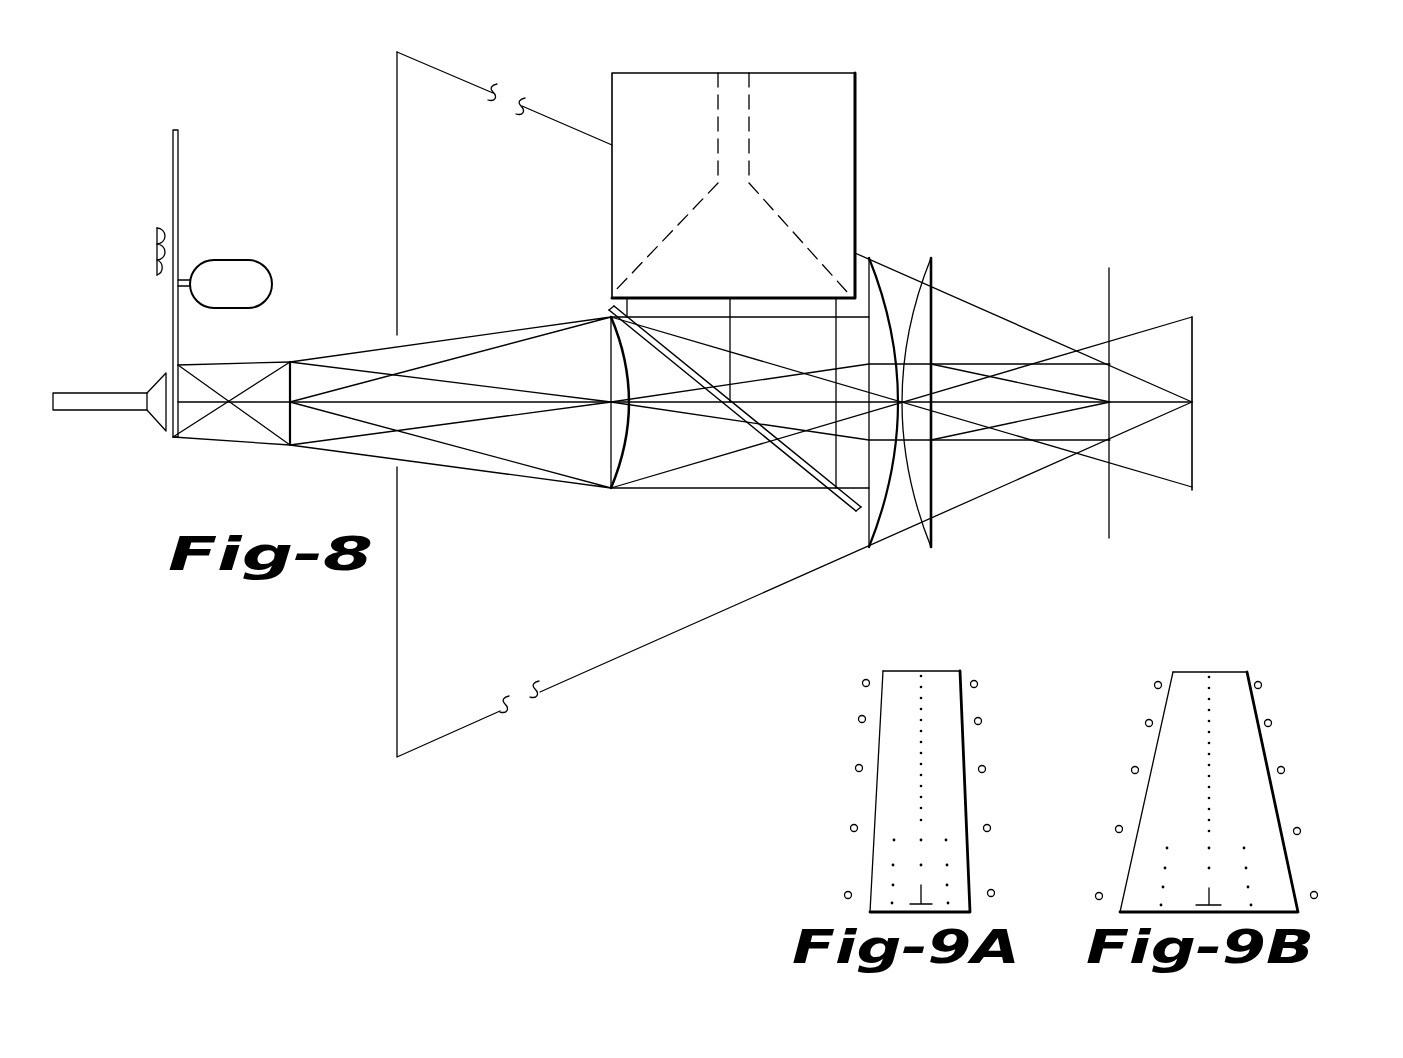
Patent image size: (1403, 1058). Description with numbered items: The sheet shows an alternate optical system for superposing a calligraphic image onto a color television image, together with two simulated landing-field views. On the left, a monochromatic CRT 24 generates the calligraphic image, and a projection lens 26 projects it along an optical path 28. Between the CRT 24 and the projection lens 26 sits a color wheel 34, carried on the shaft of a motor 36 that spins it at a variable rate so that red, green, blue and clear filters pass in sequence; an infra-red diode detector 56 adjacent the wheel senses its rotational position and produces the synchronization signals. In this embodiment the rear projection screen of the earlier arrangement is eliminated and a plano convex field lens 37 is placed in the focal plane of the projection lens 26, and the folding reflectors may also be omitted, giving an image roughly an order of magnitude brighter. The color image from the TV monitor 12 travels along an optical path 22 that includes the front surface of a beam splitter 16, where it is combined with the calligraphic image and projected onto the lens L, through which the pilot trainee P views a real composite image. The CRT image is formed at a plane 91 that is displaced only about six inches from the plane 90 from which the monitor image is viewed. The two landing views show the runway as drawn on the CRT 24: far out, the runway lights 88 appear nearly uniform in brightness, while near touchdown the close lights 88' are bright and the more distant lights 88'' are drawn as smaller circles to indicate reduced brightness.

In FIG. 8, the TV monitor 12 is at (857, 112).
In FIG. 8, the beam splitter 16 is at (796, 458).
In FIG. 8, the optical path 22 is at (836, 333).
In FIG. 8, the CRT 24 is at (152, 383).
In FIG. 8, the projection lens 26 is at (240, 365).
In FIG. 8, the optical path 28 is at (557, 324).
In FIG. 8, the color wheel 34 is at (178, 178).
In FIG. 8, the motor 36 is at (250, 298).
In FIG. 8, the plano convex field lens 37 is at (609, 441).
In FIG. 8, the infra-red diode detector 56 is at (158, 225).
In FIG. 8, the plane 90 is at (1194, 353).
In FIG. 8, the plane 91 is at (1110, 512).
In FIG. 8, the lens L is at (932, 328).
In FIG. 8, the pilot trainee P is at (1108, 400).
In FIG. 9A, the runway lights 88 is at (934, 789).
In FIG. 9B, the lights 88' is at (1312, 809).
In FIG. 9B, the less bright lights 88'' is at (1215, 784).